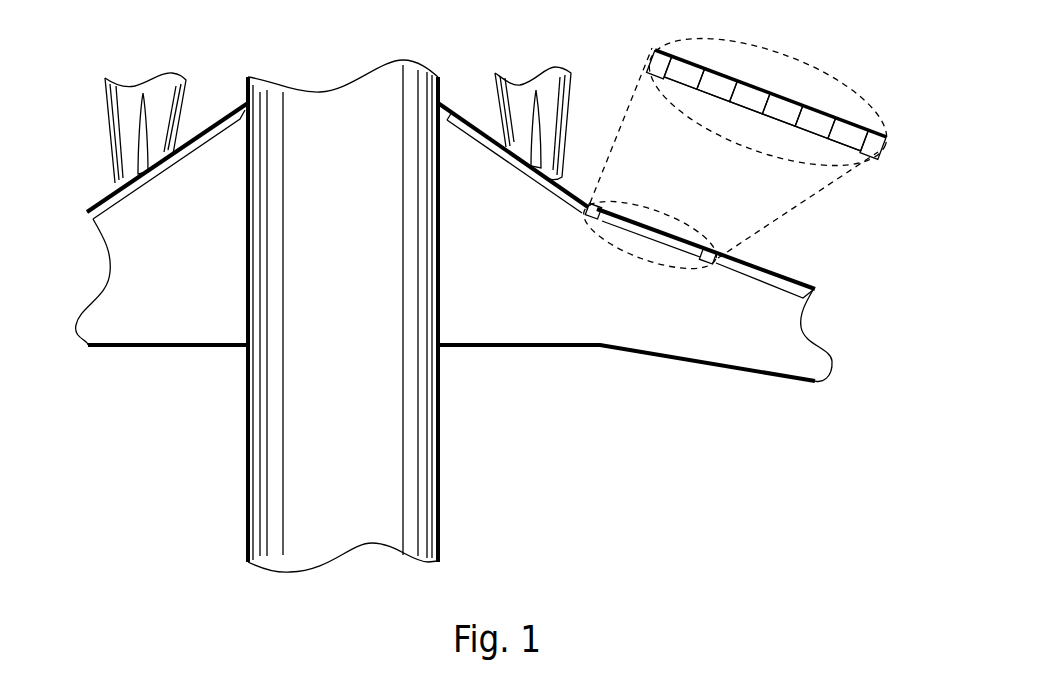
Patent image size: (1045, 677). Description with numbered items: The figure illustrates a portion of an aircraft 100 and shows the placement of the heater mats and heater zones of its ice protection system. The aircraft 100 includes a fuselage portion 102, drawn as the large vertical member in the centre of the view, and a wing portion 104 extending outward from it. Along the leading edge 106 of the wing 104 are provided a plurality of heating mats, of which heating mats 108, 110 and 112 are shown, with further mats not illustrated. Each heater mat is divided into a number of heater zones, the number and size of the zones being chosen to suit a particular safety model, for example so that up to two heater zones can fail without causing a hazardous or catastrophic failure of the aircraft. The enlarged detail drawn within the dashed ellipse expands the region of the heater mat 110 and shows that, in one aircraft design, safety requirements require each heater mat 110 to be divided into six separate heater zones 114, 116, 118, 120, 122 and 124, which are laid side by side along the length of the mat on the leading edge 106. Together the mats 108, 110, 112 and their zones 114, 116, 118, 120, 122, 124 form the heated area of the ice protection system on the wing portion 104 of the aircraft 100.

The aircraft 100 is at (681, 487).
The fuselage portion 102 is at (330, 265).
The wing portion 104 is at (514, 291).
The leading edge 106 is at (815, 288).
The heating mat 108 is at (508, 157).
The heating mat 110 is at (672, 243).
The heating mat 112 is at (760, 271).
The heater zone 114 is at (684, 72).
The heater zone 116 is at (717, 85).
The heater zone 118 is at (750, 97).
The heater zone 120 is at (782, 109).
The heater zone 122 is at (815, 122).
The heater zone 124 is at (848, 134).